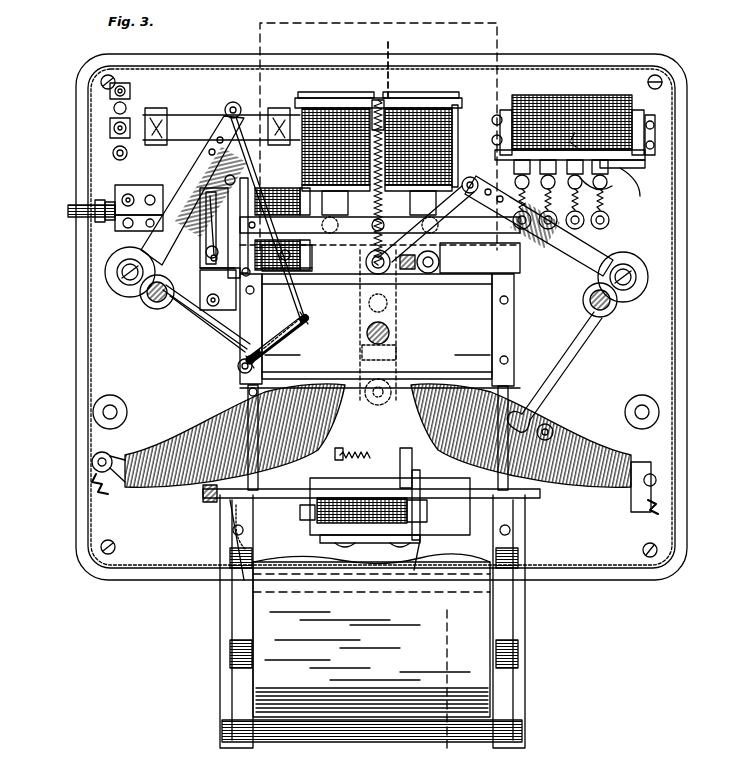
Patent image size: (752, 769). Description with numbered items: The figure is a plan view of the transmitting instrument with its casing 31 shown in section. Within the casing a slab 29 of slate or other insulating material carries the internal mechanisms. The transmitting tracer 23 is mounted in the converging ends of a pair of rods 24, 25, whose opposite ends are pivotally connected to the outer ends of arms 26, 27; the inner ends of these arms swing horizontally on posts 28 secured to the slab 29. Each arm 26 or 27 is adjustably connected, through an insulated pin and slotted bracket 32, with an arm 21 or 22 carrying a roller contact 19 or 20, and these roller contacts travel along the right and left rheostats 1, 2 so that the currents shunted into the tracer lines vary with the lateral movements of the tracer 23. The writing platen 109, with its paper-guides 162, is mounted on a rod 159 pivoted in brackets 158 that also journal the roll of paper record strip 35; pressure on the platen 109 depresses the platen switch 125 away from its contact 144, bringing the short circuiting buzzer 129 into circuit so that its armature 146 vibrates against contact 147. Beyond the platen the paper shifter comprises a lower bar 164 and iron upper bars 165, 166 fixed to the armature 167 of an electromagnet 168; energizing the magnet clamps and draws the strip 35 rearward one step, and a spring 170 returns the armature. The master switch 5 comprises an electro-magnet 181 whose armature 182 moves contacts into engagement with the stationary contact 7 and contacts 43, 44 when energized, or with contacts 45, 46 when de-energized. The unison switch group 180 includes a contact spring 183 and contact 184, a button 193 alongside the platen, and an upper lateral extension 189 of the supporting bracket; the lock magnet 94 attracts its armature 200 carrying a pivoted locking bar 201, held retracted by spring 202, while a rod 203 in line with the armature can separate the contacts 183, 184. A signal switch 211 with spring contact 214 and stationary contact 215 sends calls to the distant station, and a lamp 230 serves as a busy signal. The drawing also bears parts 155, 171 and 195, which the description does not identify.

The right rheostat 1 is at (592, 460).
The left rheostat 2 is at (212, 438).
The master switch 5 is at (478, 396).
The stationary contact 7 is at (630, 168).
The roller contact 19 is at (553, 433).
The roller contact 20 is at (245, 392).
The arm 21 is at (562, 378).
The arm 22 is at (218, 336).
The transmitting tracer 23 is at (284, 340).
The rod 24 is at (440, 200).
The rod 25 is at (236, 150).
The arm 26 is at (537, 226).
The arm 27 is at (160, 220).
The post 28 is at (126, 284).
The slab 29 is at (377, 316).
The transmitter casing 31 is at (78, 335).
The pin and slotted bracket 32 is at (155, 308).
The paper record strip 35 is at (497, 40).
The contact 43 is at (577, 150).
The contact 44 is at (510, 150).
The contact 45 is at (607, 187).
The contact 46 is at (557, 194).
The lock magnet 94 is at (269, 226).
The writing platen 109 is at (380, 331).
The platen switch 125 is at (392, 330).
The short circuiting buzzer 129 is at (328, 490).
The contact 144 is at (382, 297).
The armature 146 is at (420, 530).
The contact 147 is at (419, 561).
The magnet coils 155 is at (378, 133).
The bracket 158 is at (222, 608).
The rod 159 is at (476, 500).
The paper-guide 162 is at (238, 366).
The lower bar 164 is at (486, 240).
The upper bar 165 is at (355, 225).
The upper bar 166 is at (480, 258).
The armature 167 is at (322, 200).
The electromagnet 168 is at (452, 130).
The spring 170 is at (384, 200).
The bearing 171 is at (436, 258).
The unison switch group 180 is at (230, 221).
The electro-magnet 181 is at (570, 118).
The armature 182 is at (655, 150).
The contact spring 183 is at (250, 278).
The contact 184 is at (218, 290).
The upper lateral extension 189 is at (224, 285).
The button 193 is at (210, 325).
The wire 195 is at (637, 189).
The armature 200 is at (212, 220).
The locking bar 201 is at (208, 260).
The spring 202 is at (212, 238).
The rod 203 is at (212, 274).
The switch 211 is at (68, 211).
The spring contact 214 is at (112, 222).
The stationary contact 215 is at (129, 204).
The lamp 230 is at (126, 110).